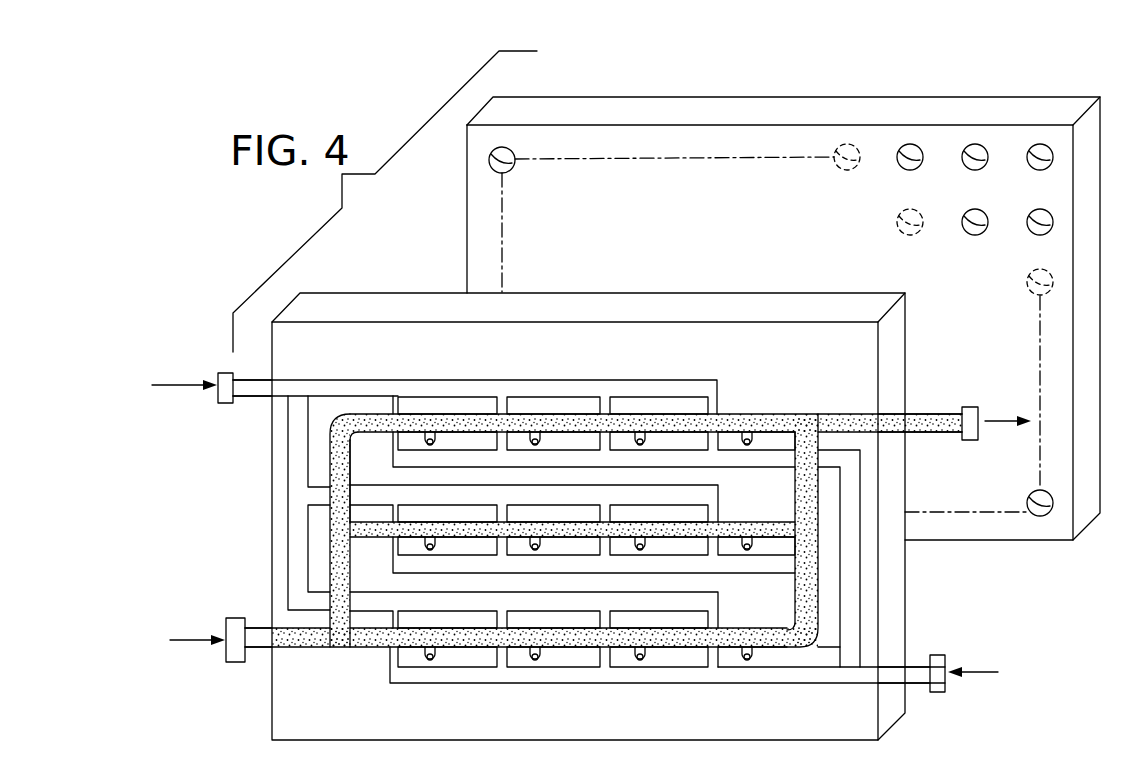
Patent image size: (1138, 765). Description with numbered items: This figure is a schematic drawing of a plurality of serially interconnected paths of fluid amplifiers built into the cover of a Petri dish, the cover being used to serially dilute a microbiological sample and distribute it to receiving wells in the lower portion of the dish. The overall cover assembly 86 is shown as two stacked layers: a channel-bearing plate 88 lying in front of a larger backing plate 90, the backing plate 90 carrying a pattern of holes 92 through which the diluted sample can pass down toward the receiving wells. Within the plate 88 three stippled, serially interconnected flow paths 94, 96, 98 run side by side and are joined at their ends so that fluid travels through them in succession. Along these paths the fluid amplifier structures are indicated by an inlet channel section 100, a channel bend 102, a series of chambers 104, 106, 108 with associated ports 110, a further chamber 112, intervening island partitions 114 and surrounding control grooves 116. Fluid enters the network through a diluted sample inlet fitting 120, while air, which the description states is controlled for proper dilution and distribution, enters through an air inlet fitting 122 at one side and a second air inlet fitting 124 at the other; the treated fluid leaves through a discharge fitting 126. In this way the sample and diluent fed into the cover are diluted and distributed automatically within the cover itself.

The analyzer cartridge assembly 86 is at (1088, 42).
The front channel plate 88 is at (428, 238).
The back plate 90 is at (623, 88).
The mounting holes 92 is at (908, 155).
The first flow channel 94 is at (779, 360).
The second flow channel 96 is at (772, 490).
The third flow channel 98 is at (770, 588).
The inlet channel section 100 is at (377, 412).
The channel bend 102 is at (350, 413).
The sensor chamber 104 is at (463, 413).
The sensor chamber 106 is at (482, 413).
The sensor chamber 108 is at (500, 413).
The sensor ports 110 is at (542, 438).
The sensor chamber 112 is at (447, 416).
The island partitions 114 is at (424, 436).
The air grooves 116 is at (392, 440).
The diluted sample inlet fitting 120 is at (234, 618).
The air inlet fitting 122 is at (221, 374).
The air inlet fitting 124 is at (966, 640).
The discharge fitting 126 is at (963, 438).